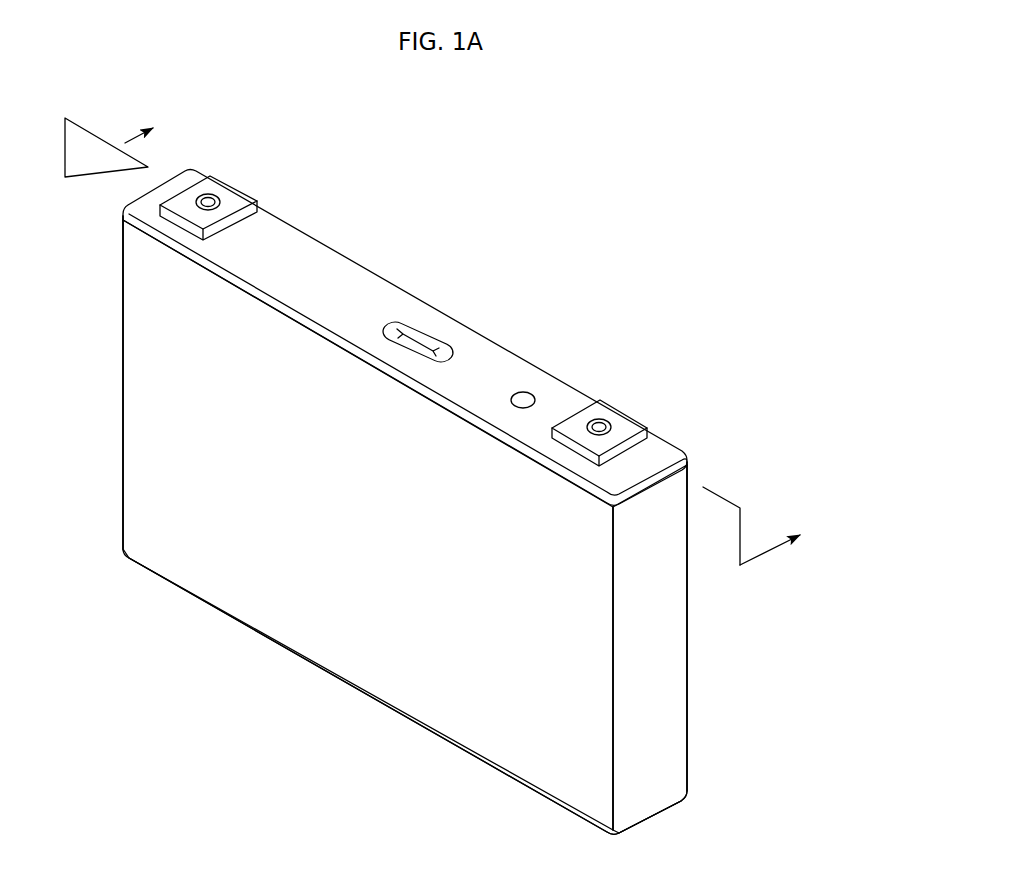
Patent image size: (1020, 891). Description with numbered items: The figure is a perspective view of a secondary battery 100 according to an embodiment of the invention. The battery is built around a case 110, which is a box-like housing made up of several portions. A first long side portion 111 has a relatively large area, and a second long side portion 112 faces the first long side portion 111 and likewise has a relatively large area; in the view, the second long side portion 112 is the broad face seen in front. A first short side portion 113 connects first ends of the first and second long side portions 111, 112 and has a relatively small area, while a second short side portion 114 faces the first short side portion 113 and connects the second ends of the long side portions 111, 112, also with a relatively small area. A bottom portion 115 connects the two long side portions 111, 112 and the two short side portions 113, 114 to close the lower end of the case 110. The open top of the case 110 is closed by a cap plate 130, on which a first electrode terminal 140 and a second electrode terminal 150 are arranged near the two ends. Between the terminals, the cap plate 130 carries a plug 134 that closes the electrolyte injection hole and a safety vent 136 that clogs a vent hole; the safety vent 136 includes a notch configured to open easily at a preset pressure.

The secondary battery 100 is at (837, 97).
The case 110 is at (295, 630).
The first long side portion 111 is at (686, 650).
The second long side portion 112 is at (393, 695).
The first short side portion 113 is at (122, 378).
The second short side portion 114 is at (670, 708).
The bottom portion 115 is at (468, 758).
The cap plate 130 is at (332, 265).
The plug 134 is at (528, 392).
The safety vent 136 is at (423, 333).
The first electrode terminal 140 is at (240, 180).
The second electrode terminal 150 is at (627, 408).